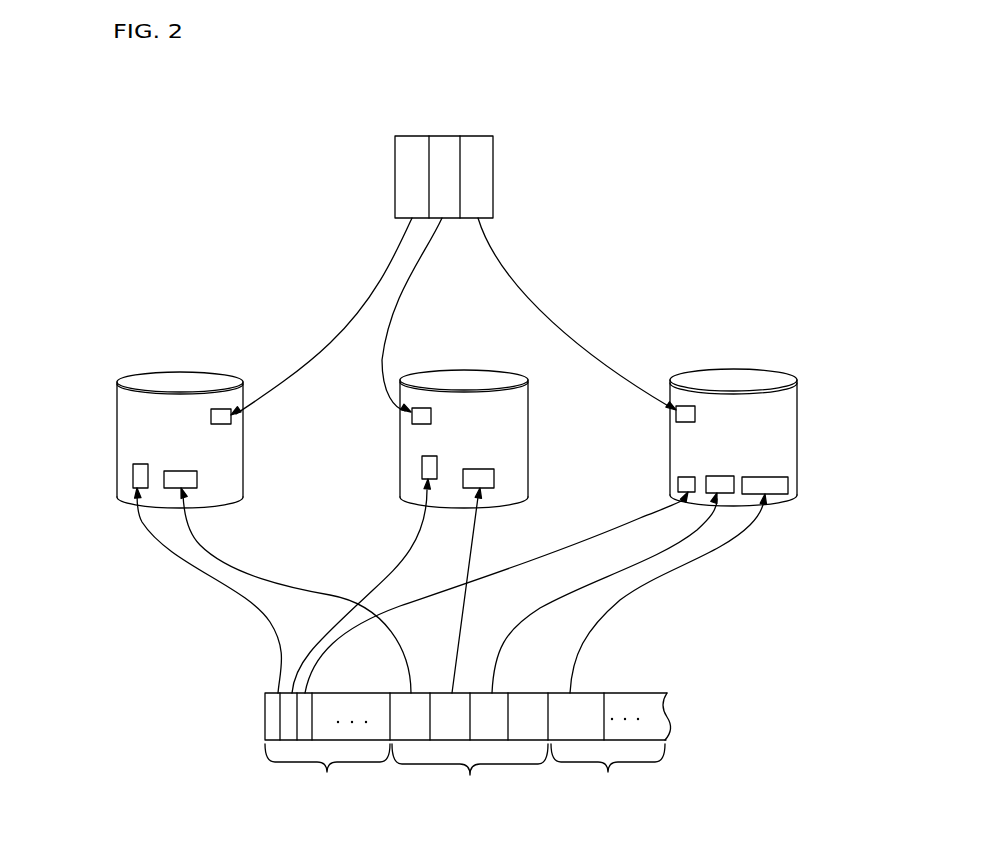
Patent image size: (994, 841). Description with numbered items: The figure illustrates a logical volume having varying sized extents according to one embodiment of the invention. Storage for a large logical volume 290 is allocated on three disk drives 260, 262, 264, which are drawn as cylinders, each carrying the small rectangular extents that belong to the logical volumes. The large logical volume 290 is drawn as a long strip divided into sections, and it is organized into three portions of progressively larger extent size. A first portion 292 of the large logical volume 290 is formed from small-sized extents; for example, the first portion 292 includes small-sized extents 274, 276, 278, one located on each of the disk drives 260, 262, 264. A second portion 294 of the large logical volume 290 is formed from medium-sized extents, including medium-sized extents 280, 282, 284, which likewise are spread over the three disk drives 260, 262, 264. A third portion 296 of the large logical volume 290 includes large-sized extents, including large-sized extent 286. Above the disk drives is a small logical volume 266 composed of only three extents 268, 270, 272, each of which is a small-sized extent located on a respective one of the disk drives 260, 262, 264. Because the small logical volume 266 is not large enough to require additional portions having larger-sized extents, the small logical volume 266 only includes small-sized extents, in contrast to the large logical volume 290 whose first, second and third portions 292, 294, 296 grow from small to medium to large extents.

The disk drive 260 is at (117, 417).
The disk drive 262 is at (408, 417).
The disk drive 264 is at (670, 438).
The small logical volume 266 is at (449, 110).
The extent 268 is at (218, 424).
The extent 270 is at (422, 425).
The extent 272 is at (676, 408).
The small-sized extent 274 is at (133, 473).
The small-sized extent 276 is at (422, 468).
The small-sized extent 278 is at (678, 485).
The medium-sized extent 280 is at (180, 471).
The medium-sized extent 282 is at (485, 469).
The medium-sized extent 284 is at (720, 476).
The large-sized extent 286 is at (762, 477).
The large logical volume 290 is at (667, 653).
The first portion 292 is at (327, 776).
The second portion 294 is at (470, 779).
The third portion 296 is at (608, 775).